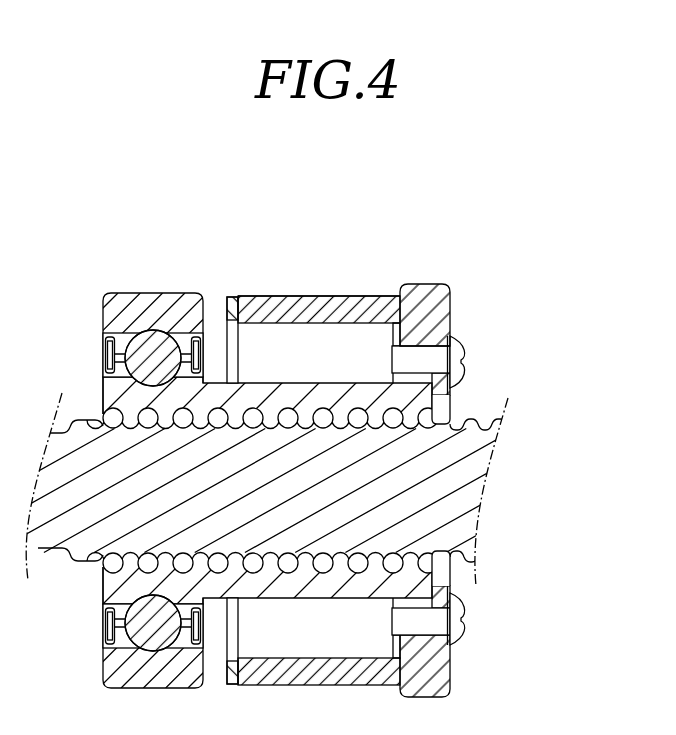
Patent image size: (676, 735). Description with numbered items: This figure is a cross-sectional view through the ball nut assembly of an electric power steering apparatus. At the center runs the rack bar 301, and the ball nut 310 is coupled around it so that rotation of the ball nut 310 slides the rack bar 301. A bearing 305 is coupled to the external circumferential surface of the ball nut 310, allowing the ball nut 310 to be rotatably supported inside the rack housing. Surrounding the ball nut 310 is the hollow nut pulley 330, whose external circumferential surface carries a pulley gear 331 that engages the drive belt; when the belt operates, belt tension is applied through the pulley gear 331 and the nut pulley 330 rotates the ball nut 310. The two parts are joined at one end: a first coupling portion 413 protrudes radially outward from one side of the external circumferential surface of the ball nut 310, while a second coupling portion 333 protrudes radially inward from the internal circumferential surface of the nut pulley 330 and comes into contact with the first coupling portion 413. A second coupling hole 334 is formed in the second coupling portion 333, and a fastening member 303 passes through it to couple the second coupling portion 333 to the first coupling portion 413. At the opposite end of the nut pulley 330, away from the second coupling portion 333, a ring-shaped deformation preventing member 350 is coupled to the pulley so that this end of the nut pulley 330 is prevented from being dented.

The rack bar 301 is at (456, 507).
The fastening member 303 is at (440, 358).
The bearing 305 is at (141, 297).
The ball nut 310 is at (324, 394).
The nut pulley 330 is at (340, 296).
The pulley gear 331 is at (291, 296).
The second coupling portion 333 is at (418, 340).
The second coupling hole 334 is at (452, 332).
The deformation preventing member 350 is at (229, 297).
The first coupling portion 413 is at (422, 337).